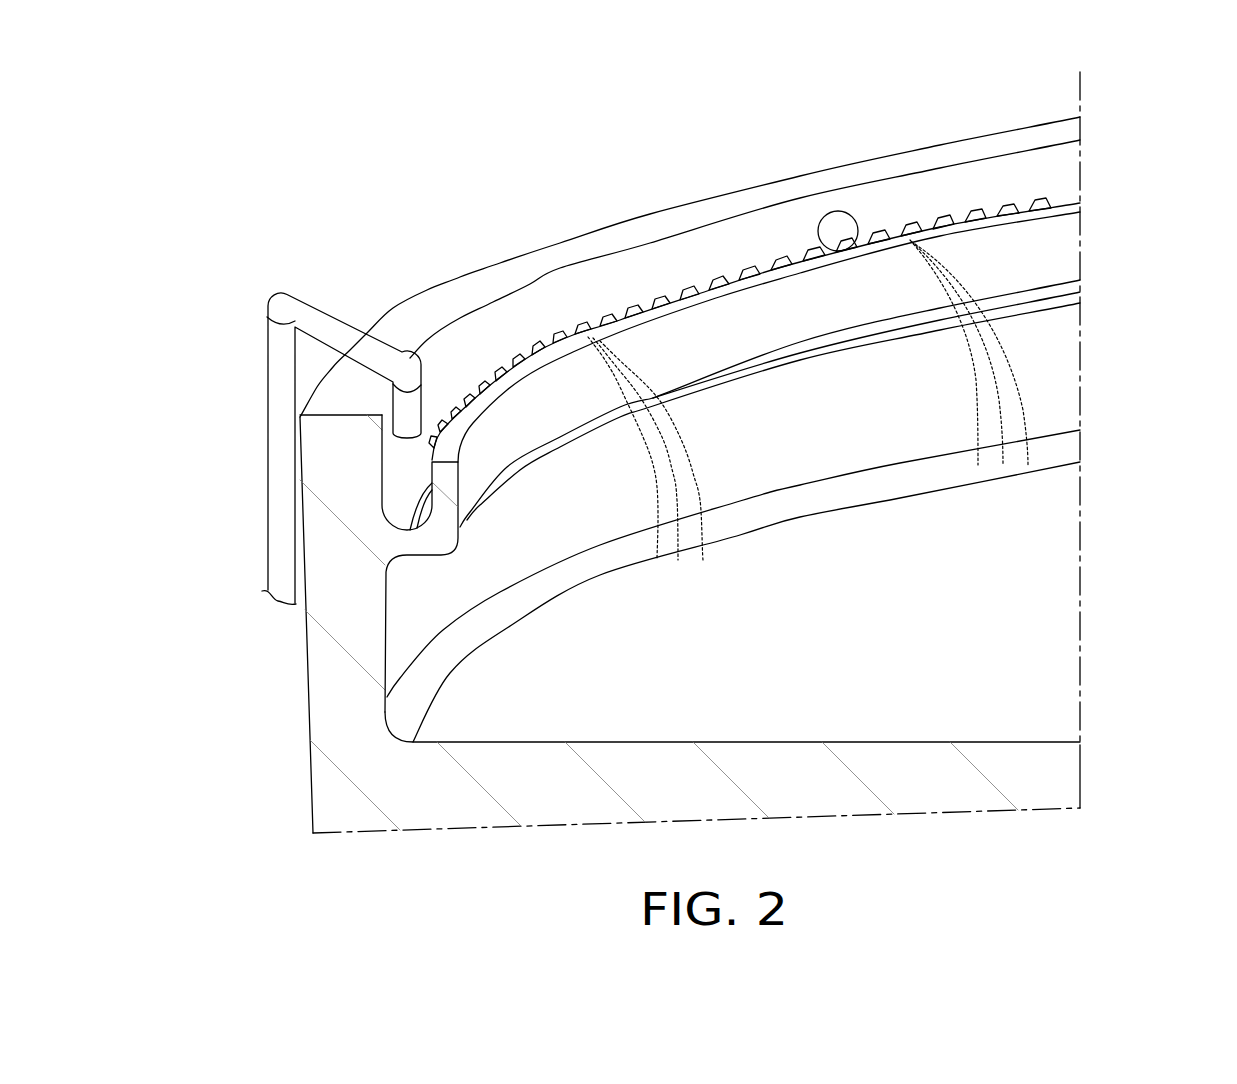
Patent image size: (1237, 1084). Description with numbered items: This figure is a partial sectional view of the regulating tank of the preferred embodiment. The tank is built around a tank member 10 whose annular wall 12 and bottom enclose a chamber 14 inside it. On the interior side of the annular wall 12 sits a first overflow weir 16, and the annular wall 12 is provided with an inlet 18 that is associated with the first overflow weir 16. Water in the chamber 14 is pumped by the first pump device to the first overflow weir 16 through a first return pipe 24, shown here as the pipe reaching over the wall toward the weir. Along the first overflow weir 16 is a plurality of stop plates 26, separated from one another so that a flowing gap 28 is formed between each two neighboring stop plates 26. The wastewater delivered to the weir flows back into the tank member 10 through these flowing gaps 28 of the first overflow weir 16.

The tank member 10 is at (627, 190).
The annular wall 12 is at (323, 663).
The chamber 14 is at (1005, 607).
The first overflow weir 16 is at (458, 383).
The inlet 18 is at (830, 225).
The first return pipe 24 is at (275, 390).
The stop plates 26 is at (993, 213).
The flowing gap 28 is at (1043, 207).